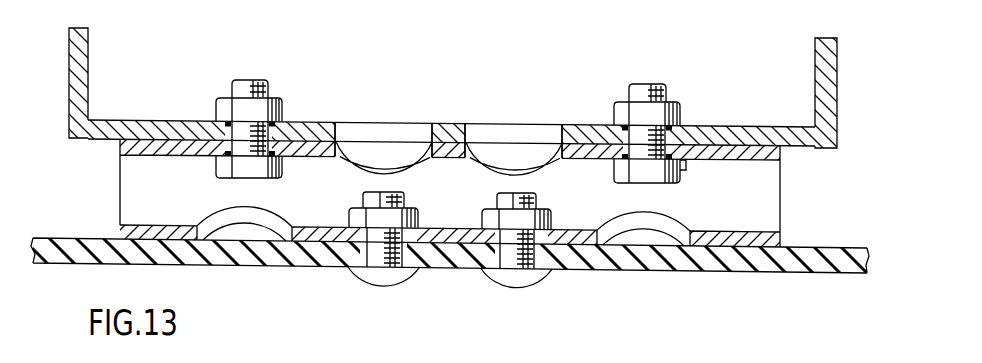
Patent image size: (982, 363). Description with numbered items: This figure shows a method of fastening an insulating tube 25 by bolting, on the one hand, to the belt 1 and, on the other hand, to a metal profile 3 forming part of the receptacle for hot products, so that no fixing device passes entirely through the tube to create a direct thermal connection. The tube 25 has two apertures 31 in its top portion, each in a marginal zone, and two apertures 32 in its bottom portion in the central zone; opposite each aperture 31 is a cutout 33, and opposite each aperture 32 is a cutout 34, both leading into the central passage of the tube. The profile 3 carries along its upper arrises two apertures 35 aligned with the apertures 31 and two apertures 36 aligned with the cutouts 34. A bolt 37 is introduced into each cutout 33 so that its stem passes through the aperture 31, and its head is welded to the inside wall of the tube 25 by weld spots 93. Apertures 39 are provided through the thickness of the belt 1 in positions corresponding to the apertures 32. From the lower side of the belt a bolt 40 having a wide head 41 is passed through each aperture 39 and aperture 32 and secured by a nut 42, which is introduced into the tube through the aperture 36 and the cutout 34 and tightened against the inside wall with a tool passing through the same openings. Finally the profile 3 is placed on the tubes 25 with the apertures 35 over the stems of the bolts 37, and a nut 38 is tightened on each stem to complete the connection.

The belt 1 is at (162, 271).
The metal profile 3 is at (91, 95).
The insulating tube 25 is at (722, 240).
The aperture 31 is at (212, 146).
The aperture 32 is at (350, 222).
The cutout 33 is at (250, 240).
The cutout 34 is at (403, 150).
The aperture 35 is at (281, 130).
The aperture 36 is at (347, 128).
The bolt 37 is at (230, 83).
The nut 38 is at (730, 92).
The aperture 39 is at (340, 268).
The bolt 40 is at (517, 253).
The wide head 41 is at (502, 277).
The nut 42 is at (488, 215).
The weld spot 93 is at (690, 166).